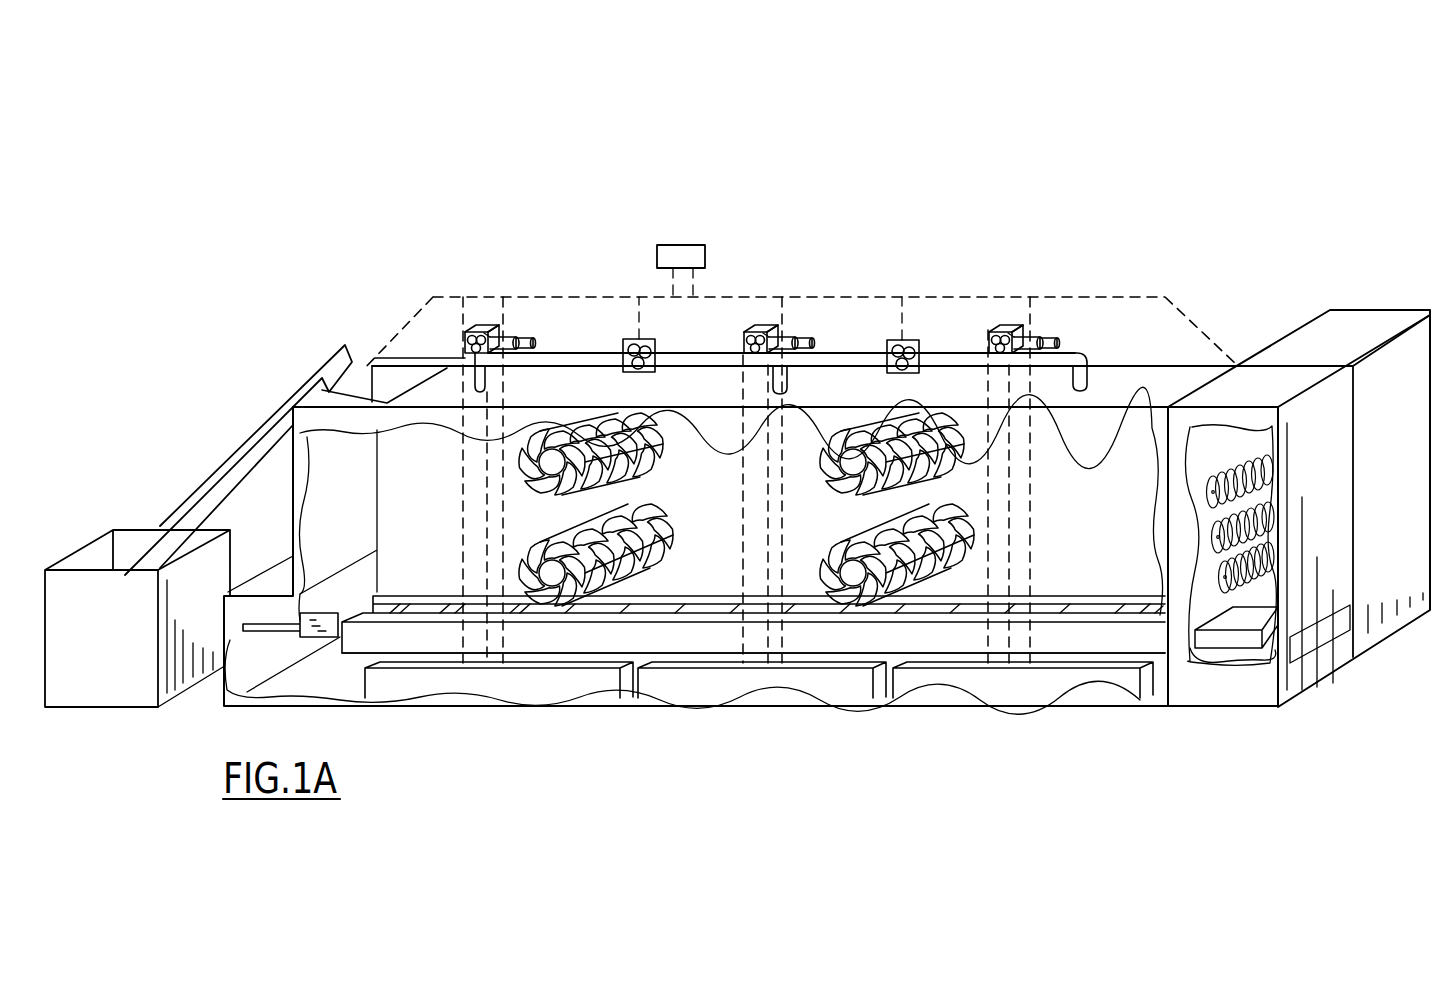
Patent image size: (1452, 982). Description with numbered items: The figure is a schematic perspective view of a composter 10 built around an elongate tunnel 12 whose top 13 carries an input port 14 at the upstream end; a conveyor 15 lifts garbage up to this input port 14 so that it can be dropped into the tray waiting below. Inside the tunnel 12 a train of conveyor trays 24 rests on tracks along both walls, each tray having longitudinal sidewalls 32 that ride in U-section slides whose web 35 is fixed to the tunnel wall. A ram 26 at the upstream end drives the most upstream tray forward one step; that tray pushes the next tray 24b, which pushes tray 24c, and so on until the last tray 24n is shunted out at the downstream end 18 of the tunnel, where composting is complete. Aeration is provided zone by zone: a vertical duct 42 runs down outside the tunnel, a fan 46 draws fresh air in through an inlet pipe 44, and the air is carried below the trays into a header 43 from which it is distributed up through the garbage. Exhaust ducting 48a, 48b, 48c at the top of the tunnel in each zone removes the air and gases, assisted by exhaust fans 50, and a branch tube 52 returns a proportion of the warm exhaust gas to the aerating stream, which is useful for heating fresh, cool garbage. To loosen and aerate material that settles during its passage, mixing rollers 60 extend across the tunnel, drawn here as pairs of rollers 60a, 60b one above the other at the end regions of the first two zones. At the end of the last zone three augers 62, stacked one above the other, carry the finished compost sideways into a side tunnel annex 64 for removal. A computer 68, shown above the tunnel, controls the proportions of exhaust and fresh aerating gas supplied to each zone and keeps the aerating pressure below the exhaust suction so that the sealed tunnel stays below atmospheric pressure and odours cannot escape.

The composter 10 is at (558, 133).
The tunnel 12 is at (387, 507).
The top 13 is at (450, 390).
The input port 14 is at (367, 383).
The conveyor 15 is at (262, 430).
The downstream end 18 is at (1190, 333).
The conveyor trays 24 is at (678, 618).
The conveyor tray 24b is at (450, 613).
The conveyor tray 24c is at (392, 613).
The conveyor tray 24n is at (1150, 615).
The ram 26 is at (303, 627).
The tray sidewalls 32 is at (713, 427).
The web 35 is at (823, 632).
The vertical duct 42 is at (497, 325).
The header 43 is at (582, 685).
The inlet pipe 44 is at (533, 337).
The fan 46 is at (463, 297).
The exhaust ducting 48a is at (495, 373).
The exhaust ducting 48b is at (790, 383).
The exhaust ducting 48c is at (1087, 385).
The exhaust fans 50 is at (648, 340).
The branch tube 52 is at (518, 337).
The mixing rollers 60 is at (613, 437).
The mixing roller 60a is at (875, 470).
The mixing roller 60b is at (857, 573).
The augers 62 is at (1270, 440).
The side tunnel annex 64 is at (1277, 372).
The computer 68 is at (685, 250).